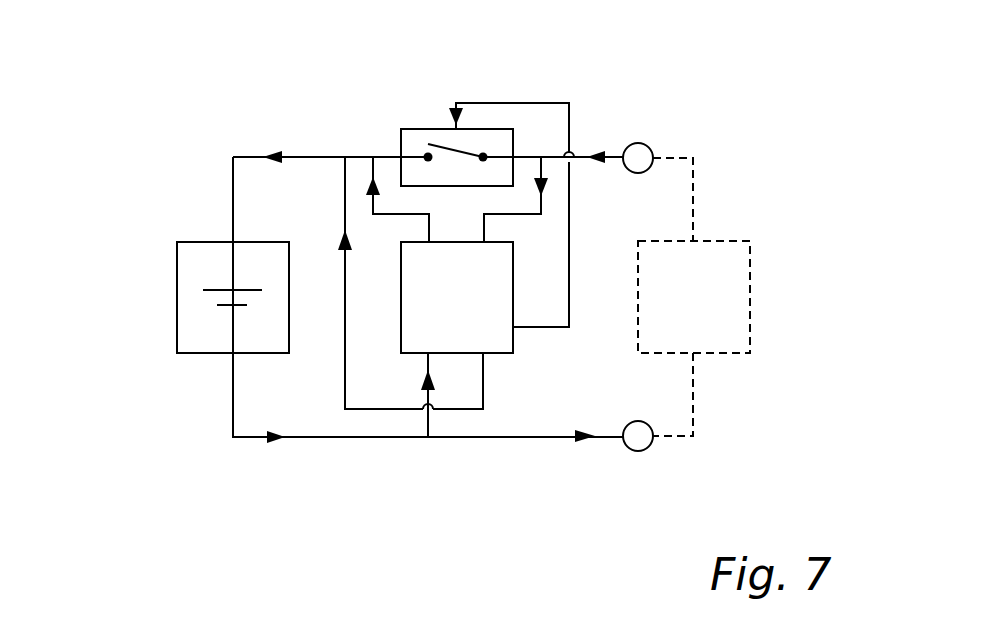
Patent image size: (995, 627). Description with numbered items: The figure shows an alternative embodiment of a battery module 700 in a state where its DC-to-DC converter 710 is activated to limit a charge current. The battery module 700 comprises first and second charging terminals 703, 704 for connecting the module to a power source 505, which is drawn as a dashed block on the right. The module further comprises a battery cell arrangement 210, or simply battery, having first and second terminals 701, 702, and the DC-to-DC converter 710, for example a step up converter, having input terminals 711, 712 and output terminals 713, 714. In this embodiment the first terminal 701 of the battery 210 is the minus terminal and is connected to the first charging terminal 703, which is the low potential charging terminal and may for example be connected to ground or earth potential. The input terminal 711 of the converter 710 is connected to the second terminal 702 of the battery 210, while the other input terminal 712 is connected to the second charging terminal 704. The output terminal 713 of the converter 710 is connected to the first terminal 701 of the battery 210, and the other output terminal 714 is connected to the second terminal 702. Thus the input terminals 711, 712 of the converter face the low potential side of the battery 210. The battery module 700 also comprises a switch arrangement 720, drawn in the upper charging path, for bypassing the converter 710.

The battery module 700 is at (101, 508).
The battery cell arrangement 210 is at (177, 327).
The first terminal 701 is at (232, 355).
The second terminal 702 is at (232, 241).
The first charging terminal 703 is at (638, 451).
The second charging terminal 704 is at (638, 143).
The power source 505 is at (750, 270).
The DC-to-DC converter 710 is at (401, 345).
The input terminal 711 is at (428, 242).
The input terminal 712 is at (487, 240).
The output terminal 713 is at (420, 354).
The output terminal 714 is at (486, 355).
The switch arrangement 720 is at (443, 128).